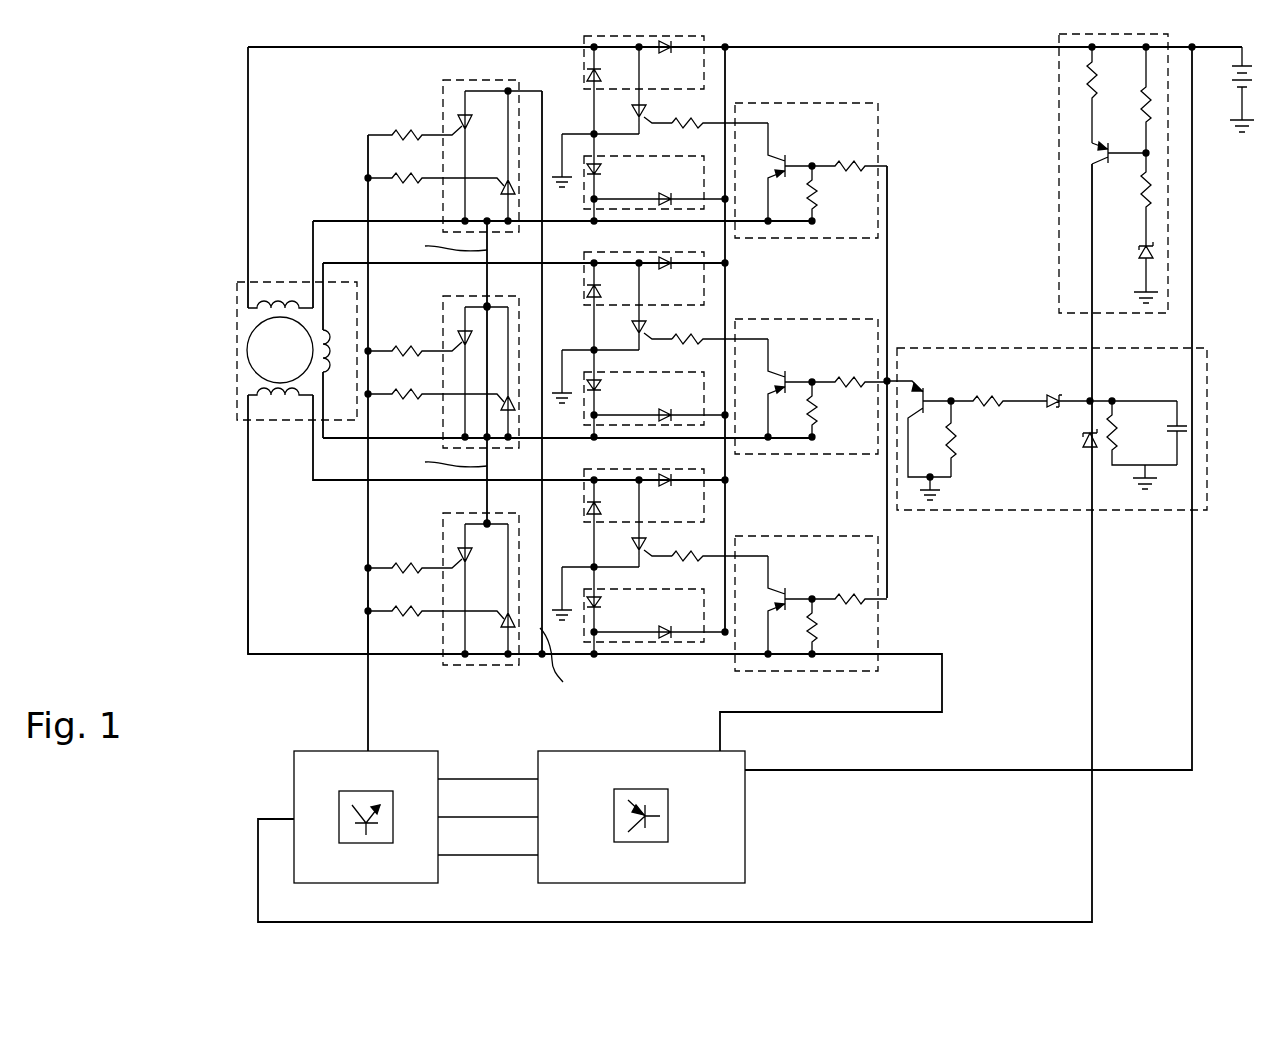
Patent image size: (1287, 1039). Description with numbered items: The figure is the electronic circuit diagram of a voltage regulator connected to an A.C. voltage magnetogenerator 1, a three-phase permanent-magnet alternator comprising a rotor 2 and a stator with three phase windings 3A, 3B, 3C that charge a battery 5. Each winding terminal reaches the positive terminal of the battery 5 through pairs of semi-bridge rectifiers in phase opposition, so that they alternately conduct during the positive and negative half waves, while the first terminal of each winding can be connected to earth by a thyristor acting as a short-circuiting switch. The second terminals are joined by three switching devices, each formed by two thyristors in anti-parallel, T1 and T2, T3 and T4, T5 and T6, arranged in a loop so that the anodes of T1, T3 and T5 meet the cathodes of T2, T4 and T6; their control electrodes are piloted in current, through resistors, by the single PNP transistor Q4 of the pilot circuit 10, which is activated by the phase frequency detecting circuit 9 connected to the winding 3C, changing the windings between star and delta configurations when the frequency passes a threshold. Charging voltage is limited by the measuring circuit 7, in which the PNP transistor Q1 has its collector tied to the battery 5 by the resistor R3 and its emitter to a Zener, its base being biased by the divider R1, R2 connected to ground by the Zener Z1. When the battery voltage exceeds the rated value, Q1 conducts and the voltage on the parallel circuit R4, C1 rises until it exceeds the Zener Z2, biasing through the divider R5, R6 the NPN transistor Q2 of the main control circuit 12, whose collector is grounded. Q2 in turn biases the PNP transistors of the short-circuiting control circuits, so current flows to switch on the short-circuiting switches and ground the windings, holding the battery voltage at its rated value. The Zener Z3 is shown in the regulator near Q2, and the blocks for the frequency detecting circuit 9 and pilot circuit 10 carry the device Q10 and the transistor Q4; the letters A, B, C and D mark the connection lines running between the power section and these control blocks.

The A.C. voltage magnetogenerator 1 is at (297, 351).
The rotor 2 is at (280, 350).
The phase winding 3A is at (280, 297).
The phase winding 3B is at (336, 351).
The phase winding 3C is at (280, 404).
The battery 5 is at (1251, 86).
The voltage measuring circuit 7 is at (1113, 173).
The phase frequency detecting circuit 9 is at (641, 817).
The pilot circuit 10 is at (366, 817).
The main control circuit 12 is at (1045, 429).
The thyristor T1 is at (476, 156).
The thyristor T2 is at (495, 156).
The thyristor T3 is at (476, 372).
The thyristor T4 is at (495, 372).
The thyristor T5 is at (476, 589).
The thyristor T6 is at (495, 589).
The PNP transistor Q1 is at (1104, 153).
The resistor R1 is at (1131, 100).
The resistor R2 is at (1131, 199).
The resistor R3 is at (1106, 95).
The Zener diode Z1 is at (1135, 272).
The NPN transistor Q2 is at (919, 419).
The resistor R5 is at (999, 390).
The resistor R6 is at (964, 437).
The Zener diode Z2 is at (1112, 384).
The Zener diode Z3 is at (1076, 425).
The resistor R4 is at (1142, 431).
The capacitor C1 is at (1168, 433).
The PNP transistor Q4 is at (366, 836).
The transistor Q10 is at (641, 835).
The terminal A is at (260, 627).
The terminal B is at (346, 627).
The terminal C is at (1103, 630).
The terminal D is at (1201, 630).